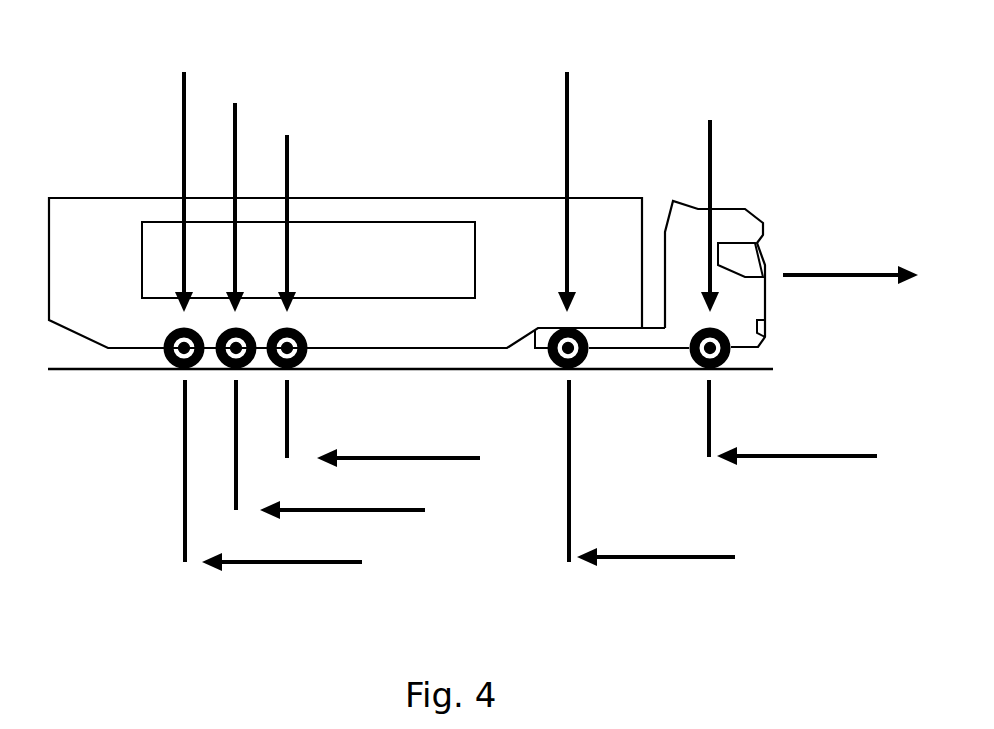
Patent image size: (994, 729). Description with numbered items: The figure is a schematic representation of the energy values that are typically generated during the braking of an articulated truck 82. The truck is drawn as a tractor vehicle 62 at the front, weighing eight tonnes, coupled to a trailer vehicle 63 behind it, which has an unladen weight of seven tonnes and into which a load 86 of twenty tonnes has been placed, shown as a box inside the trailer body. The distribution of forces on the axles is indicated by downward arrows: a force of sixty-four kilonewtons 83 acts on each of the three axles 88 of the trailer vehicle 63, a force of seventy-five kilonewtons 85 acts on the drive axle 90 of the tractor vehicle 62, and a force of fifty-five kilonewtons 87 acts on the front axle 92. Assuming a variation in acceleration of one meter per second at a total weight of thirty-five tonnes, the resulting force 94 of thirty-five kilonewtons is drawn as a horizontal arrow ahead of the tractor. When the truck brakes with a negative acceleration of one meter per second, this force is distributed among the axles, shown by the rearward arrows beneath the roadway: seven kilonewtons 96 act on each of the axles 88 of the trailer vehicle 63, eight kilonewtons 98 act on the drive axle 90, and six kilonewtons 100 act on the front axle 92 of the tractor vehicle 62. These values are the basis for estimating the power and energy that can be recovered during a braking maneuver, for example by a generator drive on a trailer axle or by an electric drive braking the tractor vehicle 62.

The articulated truck 82 is at (69, 158).
The axle load of sixty-four kilonewtons 83 is at (288, 157).
The axle load of seventy-five kilonewtons 85 is at (567, 97).
The load 86 is at (355, 236).
The axle load of fifty-five kilonewtons 87 is at (712, 147).
The trailer vehicle 63 is at (603, 198).
The tractor vehicle 62 is at (748, 207).
The resulting force 94 is at (818, 278).
The axles of the trailer vehicle 88 is at (160, 400).
The drive axle 90 is at (550, 400).
The front axle 92 is at (690, 400).
The braking force of seven kilonewtons 96 is at (362, 563).
The braking force of eight kilonewtons 98 is at (668, 559).
The braking force of six kilonewtons 100 is at (780, 457).